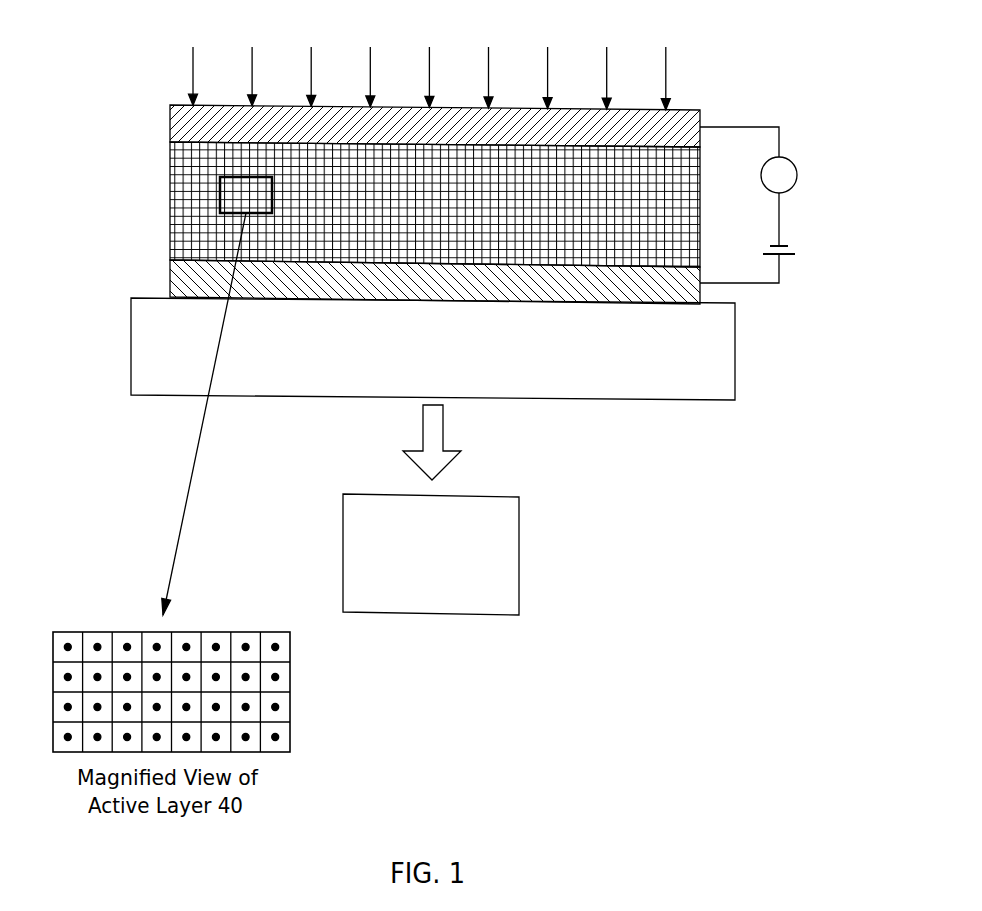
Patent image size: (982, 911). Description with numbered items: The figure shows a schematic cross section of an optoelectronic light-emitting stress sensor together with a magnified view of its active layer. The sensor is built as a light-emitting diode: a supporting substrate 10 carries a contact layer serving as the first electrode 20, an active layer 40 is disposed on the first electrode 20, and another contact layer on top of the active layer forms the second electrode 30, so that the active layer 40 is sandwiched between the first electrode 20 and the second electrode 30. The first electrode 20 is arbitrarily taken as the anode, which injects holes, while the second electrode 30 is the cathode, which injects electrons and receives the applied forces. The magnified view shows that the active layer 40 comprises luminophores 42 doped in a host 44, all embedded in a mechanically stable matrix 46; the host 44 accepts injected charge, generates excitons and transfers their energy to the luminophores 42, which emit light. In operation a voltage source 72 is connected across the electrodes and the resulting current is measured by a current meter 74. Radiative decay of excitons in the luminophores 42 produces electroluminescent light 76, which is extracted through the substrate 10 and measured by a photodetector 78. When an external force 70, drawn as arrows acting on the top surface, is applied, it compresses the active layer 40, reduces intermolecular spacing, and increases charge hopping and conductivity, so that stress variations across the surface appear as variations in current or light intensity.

The supporting substrate 10 is at (130, 345).
The first electrode 20 is at (168, 277).
The second electrode 30 is at (168, 132).
The active layer 40 is at (168, 193).
The luminophores 42 is at (288, 737).
The host 44 is at (282, 700).
The matrix 46 is at (288, 662).
The external force 70 is at (665, 50).
The voltage source 72 is at (793, 248).
The current meter 74 is at (795, 153).
The electroluminescent light 76 is at (448, 436).
The photodetector 78 is at (522, 557).